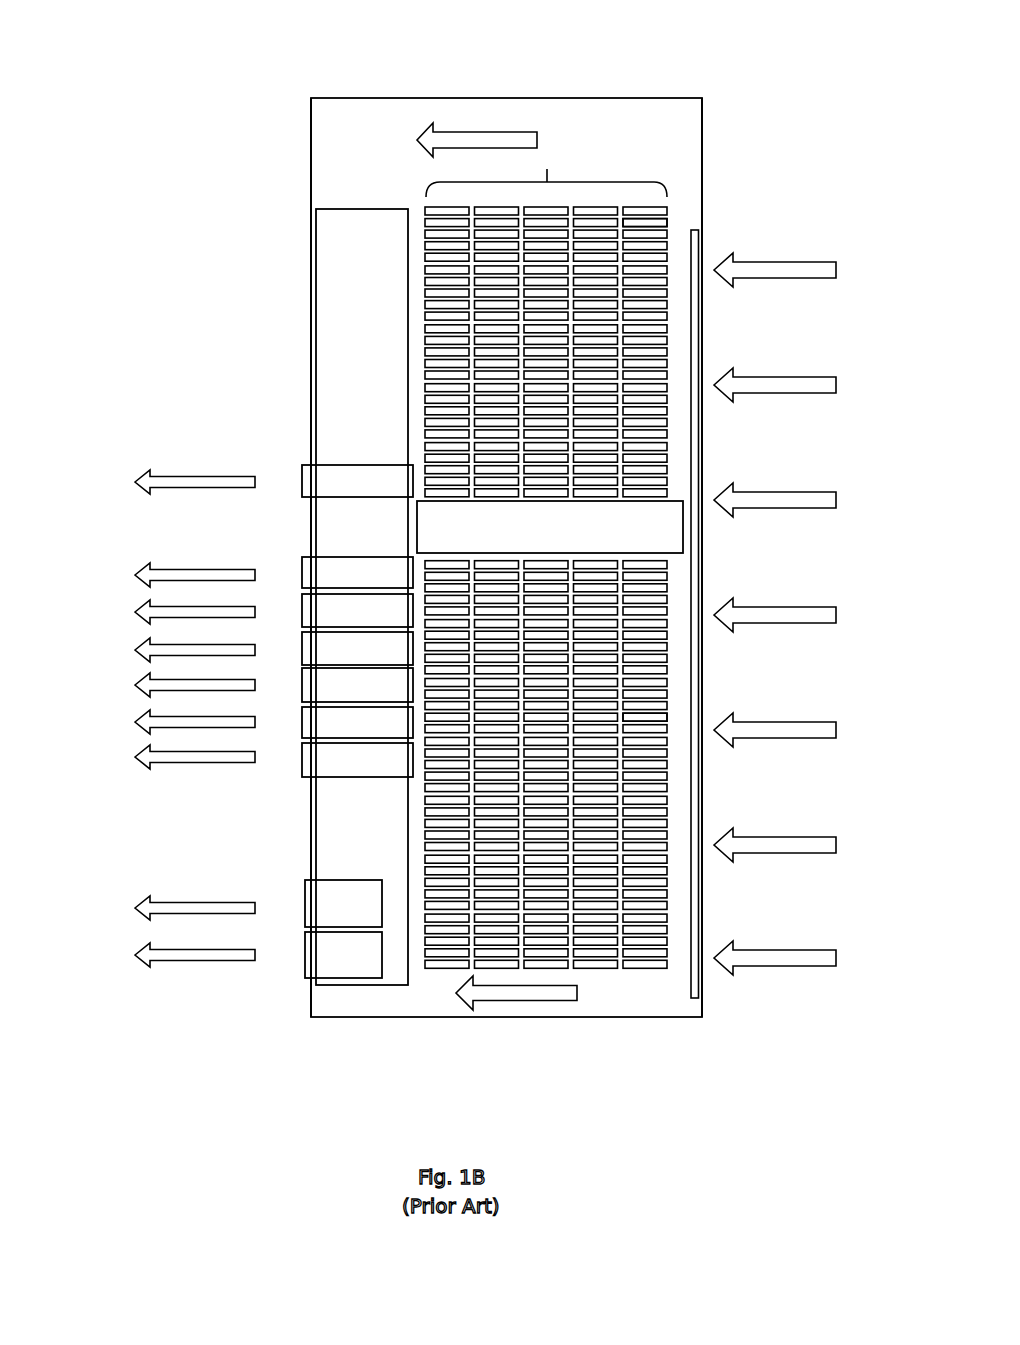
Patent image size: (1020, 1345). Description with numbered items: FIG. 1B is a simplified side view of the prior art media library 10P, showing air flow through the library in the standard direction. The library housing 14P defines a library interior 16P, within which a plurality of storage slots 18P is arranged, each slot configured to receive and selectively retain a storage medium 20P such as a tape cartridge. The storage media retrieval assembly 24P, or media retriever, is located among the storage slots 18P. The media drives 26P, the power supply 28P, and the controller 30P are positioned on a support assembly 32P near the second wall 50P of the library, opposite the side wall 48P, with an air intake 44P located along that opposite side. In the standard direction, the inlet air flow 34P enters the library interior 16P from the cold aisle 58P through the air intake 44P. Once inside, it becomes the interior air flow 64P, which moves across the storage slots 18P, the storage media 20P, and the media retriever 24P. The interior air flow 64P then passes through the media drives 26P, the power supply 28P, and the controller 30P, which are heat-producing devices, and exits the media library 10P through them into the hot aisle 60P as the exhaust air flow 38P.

The media library 10P is at (313, 62).
The library housing 14P is at (310, 190).
The library interior 16P is at (328, 142).
The storage slots 18P is at (547, 157).
The storage medium 20P is at (666, 221).
The storage media retrieval assembly 24P is at (583, 539).
The media drives 26P is at (302, 468).
The power supply 28P is at (303, 912).
The controller 30P is at (303, 963).
The support assembly 32P is at (315, 313).
The inlet air flow 34P is at (777, 262).
The exhaust air flow 38P is at (210, 477).
The air intake 44P is at (698, 360).
The housing side wall 48P is at (703, 148).
The second wall 50P is at (312, 348).
The cold aisle 58P is at (907, 530).
The hot aisle 60P is at (78, 534).
The interior air flow 64P is at (483, 131).